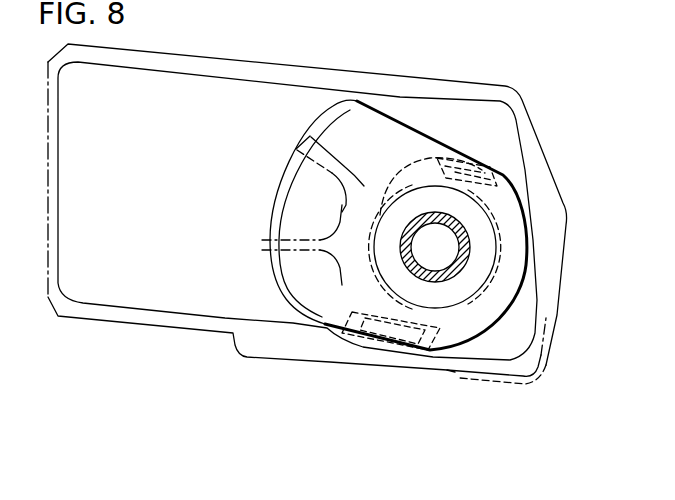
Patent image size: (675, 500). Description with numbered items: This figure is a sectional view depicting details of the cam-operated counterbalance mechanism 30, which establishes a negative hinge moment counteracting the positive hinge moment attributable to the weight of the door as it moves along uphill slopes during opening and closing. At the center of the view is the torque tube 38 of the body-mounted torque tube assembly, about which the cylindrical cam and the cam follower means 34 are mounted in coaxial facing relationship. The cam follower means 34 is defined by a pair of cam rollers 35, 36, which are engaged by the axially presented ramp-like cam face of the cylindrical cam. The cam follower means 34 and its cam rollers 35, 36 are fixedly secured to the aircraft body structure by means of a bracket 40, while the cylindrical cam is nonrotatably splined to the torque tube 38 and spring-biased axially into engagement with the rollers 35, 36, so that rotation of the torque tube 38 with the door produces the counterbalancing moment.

The counterbalance mechanism 30 is at (316, 280).
The cam follower means 34 is at (402, 158).
The cam roller 35 is at (396, 335).
The cam roller 36 is at (505, 165).
The torque tube 38 is at (468, 266).
The bracket 40 is at (282, 100).